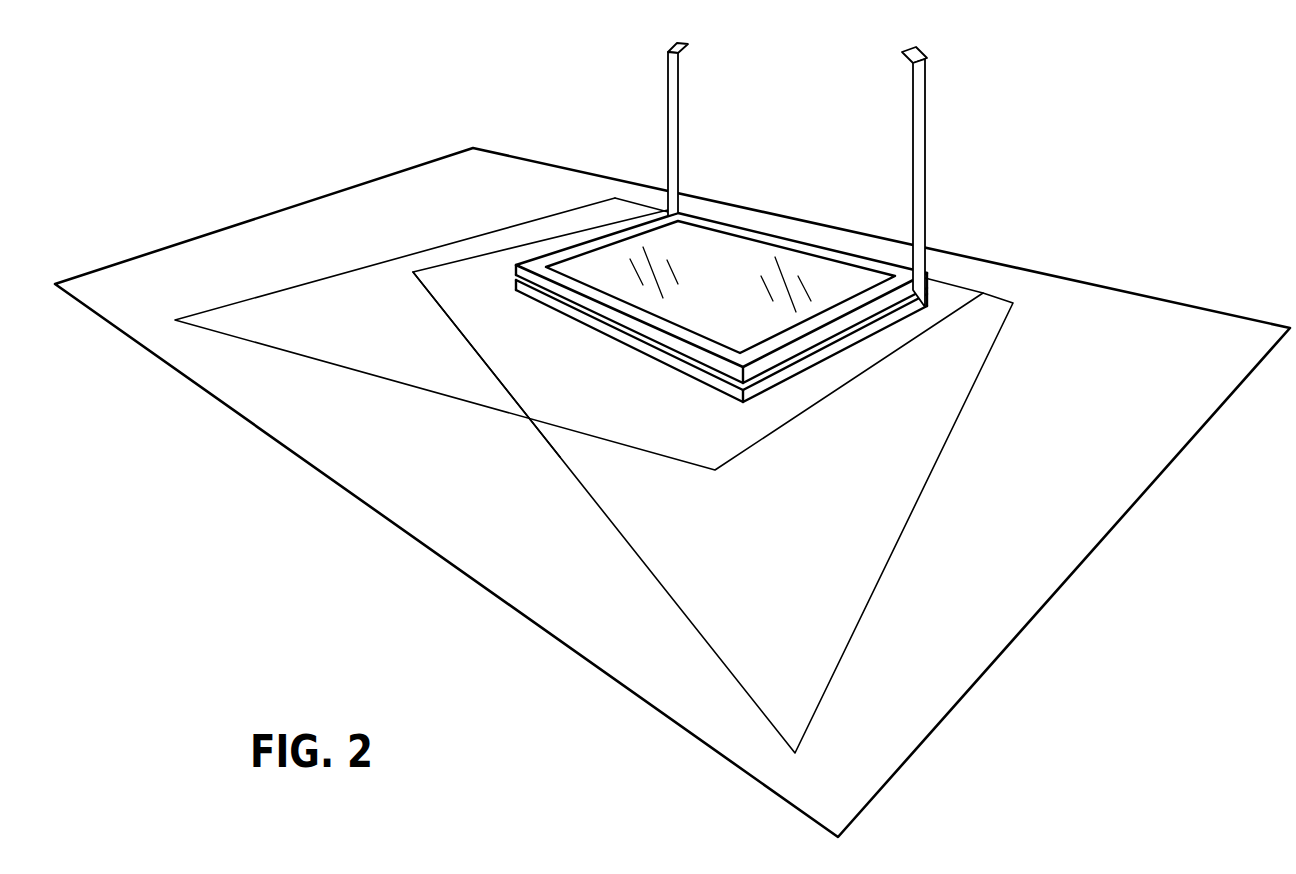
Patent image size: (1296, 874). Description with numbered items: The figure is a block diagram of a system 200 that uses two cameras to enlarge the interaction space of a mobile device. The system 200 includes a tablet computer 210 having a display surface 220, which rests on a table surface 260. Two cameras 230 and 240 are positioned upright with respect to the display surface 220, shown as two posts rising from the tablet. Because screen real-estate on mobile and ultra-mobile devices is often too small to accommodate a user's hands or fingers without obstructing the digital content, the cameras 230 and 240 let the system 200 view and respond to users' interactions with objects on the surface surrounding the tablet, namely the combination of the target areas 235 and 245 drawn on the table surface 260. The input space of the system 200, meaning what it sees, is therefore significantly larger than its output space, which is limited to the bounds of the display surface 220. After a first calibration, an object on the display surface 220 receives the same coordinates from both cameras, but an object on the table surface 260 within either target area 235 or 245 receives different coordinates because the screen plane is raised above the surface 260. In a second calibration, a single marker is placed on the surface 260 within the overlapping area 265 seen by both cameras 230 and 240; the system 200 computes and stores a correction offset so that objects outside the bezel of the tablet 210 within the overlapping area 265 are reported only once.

The system 200 is at (672, 440).
The tablet computer 210 is at (643, 213).
The display surface 220 is at (747, 257).
The camera 230 is at (684, 51).
The camera 240 is at (905, 53).
The target area 245 is at (283, 307).
The target area 235 is at (697, 566).
The table surface 260 is at (1070, 515).
The overlapping area 265 is at (563, 365).